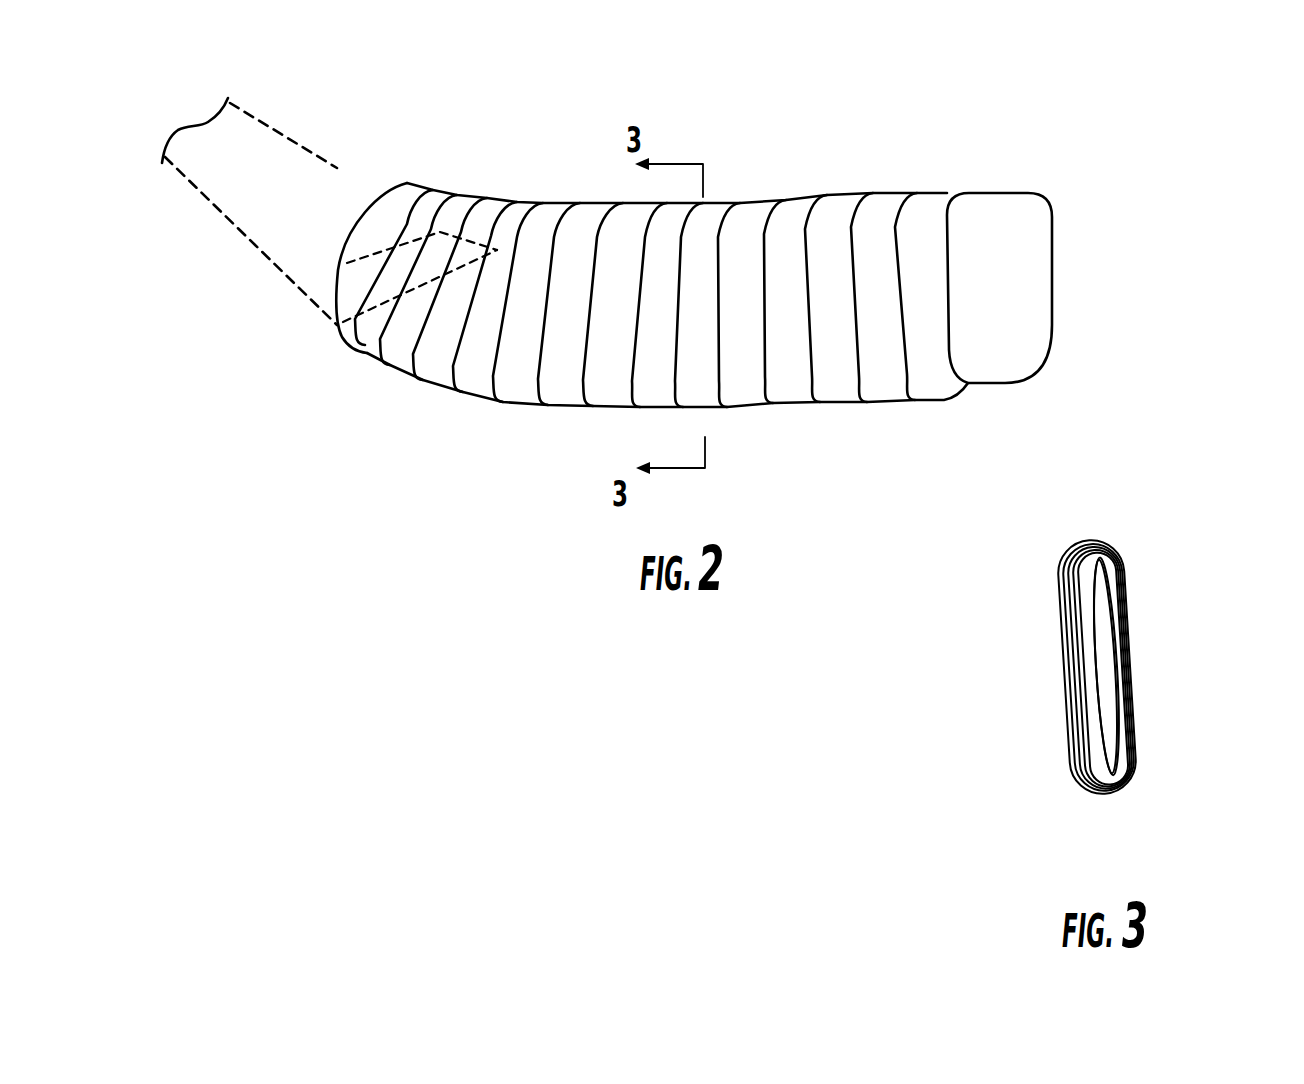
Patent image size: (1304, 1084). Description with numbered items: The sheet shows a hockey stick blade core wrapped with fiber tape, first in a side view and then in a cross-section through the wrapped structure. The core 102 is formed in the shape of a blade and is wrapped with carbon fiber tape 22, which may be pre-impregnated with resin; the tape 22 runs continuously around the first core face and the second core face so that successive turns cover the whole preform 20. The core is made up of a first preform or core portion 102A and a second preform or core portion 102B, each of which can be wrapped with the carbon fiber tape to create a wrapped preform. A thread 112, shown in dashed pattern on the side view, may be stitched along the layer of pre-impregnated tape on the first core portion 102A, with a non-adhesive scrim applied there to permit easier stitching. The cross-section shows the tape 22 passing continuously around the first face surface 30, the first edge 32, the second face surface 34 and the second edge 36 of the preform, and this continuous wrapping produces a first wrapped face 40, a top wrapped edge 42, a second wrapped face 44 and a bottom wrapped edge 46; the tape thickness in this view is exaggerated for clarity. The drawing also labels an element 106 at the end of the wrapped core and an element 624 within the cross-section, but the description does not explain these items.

In FIG. 2, the preform 20 is at (337, 192).
In FIG. 3, the preform 20 is at (1113, 705).
In FIG. 2, the carbon fiber tape 22 is at (797, 215).
In FIG. 3, the carbon fiber tape 22 is at (1113, 551).
In FIG. 3, the first face surface 30 is at (1090, 618).
In FIG. 3, the first edge 32 is at (1110, 557).
In FIG. 3, the second face surface 34 is at (1127, 653).
In FIG. 3, the second edge 36 is at (1120, 790).
In FIG. 2, the first wrapped face 40 is at (567, 327).
In FIG. 3, the first wrapped face 40 is at (1092, 673).
In FIG. 2, the top wrapped edge 42 is at (743, 203).
In FIG. 3, the top wrapped edge 42 is at (1100, 550).
In FIG. 3, the second wrapped face 44 is at (1120, 594).
In FIG. 2, the bottom wrapped edge 46 is at (745, 409).
In FIG. 3, the bottom wrapped edge 46 is at (1110, 794).
In FIG. 2, the core 102 is at (578, 286).
In FIG. 2, the first core portion 102A is at (1005, 219).
In FIG. 3, the first core portion 102A is at (1105, 610).
In FIG. 2, the second core portion 102B is at (978, 349).
In FIG. 3, the second core portion 102B is at (1093, 733).
In FIG. 2, the end cap 106 is at (1027, 335).
In FIG. 2, the thread 112 is at (365, 348).
In FIG. 3, the intermediate layer 624 is at (1127, 682).